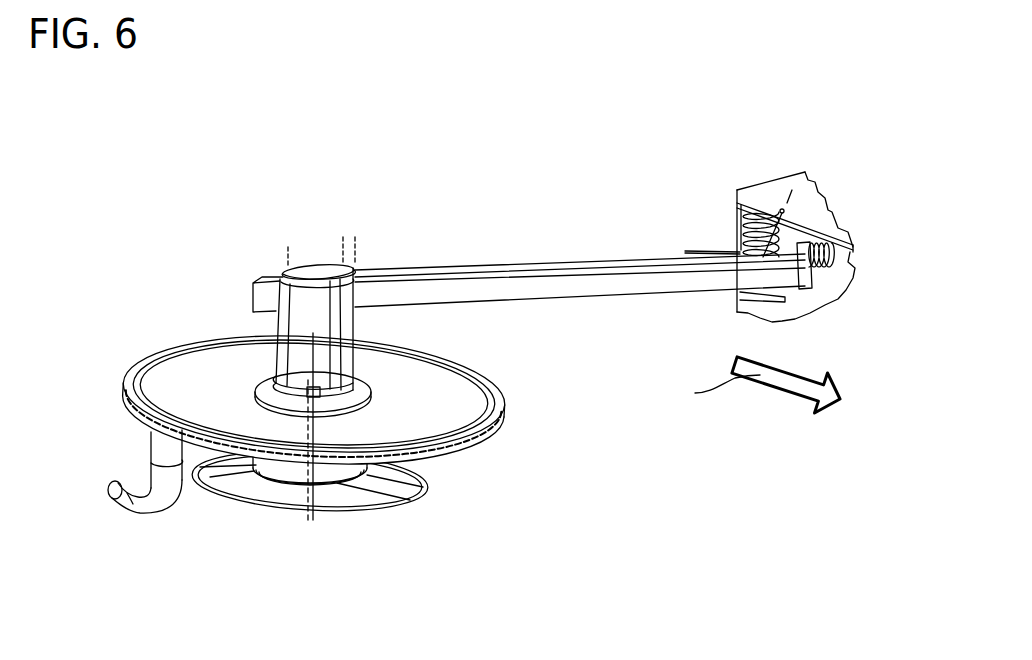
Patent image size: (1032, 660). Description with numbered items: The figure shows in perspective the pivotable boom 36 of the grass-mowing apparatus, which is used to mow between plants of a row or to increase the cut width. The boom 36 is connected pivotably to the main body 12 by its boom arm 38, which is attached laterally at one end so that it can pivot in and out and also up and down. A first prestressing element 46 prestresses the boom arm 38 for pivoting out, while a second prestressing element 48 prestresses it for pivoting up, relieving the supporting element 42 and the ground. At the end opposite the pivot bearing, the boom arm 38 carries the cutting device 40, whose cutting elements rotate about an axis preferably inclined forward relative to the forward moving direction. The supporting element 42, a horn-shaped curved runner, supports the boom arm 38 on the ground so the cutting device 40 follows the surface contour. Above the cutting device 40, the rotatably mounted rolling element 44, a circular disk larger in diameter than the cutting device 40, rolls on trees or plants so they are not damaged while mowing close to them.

The boom 36 is at (481, 108).
The main body 12 is at (787, 190).
The boom arm 38 is at (548, 281).
The cutting device 40 is at (330, 483).
The supporting element 42 is at (143, 481).
The rolling element 44 is at (138, 368).
The first prestressing element 46 is at (740, 241).
The second prestressing element 48 is at (833, 265).